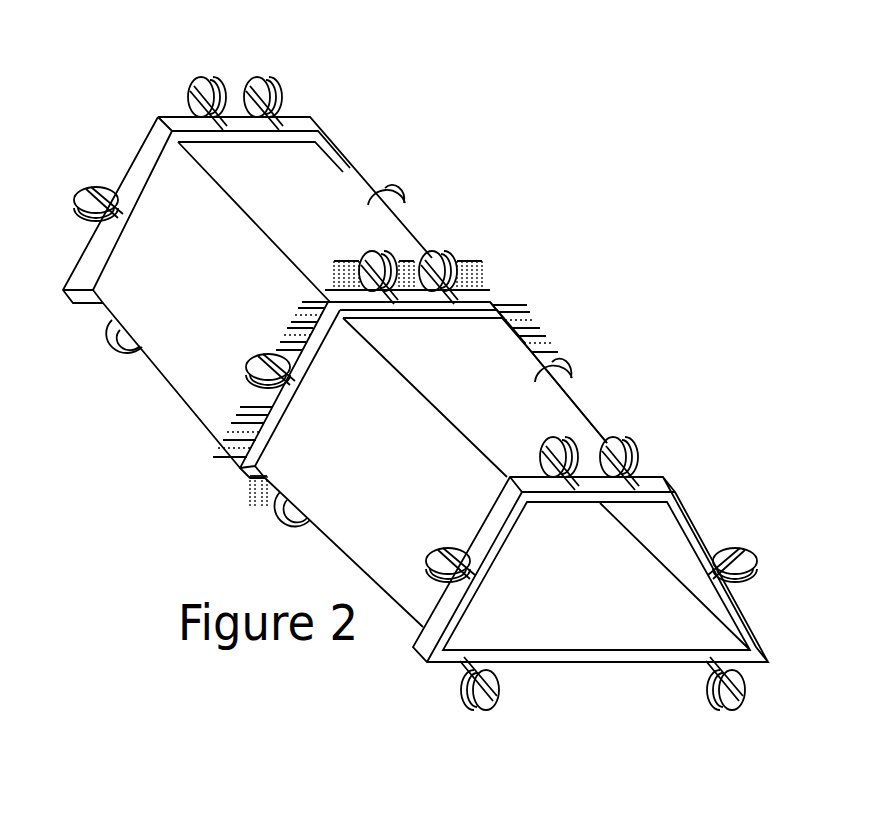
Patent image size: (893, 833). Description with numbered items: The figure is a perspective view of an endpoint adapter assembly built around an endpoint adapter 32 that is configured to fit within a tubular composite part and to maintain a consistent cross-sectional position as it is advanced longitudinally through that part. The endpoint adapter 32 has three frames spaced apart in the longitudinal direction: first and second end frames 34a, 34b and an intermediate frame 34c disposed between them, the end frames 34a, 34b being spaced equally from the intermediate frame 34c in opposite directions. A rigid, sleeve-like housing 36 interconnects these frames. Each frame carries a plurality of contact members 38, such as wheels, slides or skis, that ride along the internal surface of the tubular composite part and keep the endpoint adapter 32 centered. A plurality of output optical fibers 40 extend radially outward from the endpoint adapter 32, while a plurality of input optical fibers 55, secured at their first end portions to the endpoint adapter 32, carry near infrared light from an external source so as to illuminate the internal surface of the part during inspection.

The endpoint adapter 32 is at (586, 418).
The first end frame 34a is at (333, 150).
The second end frame 34b is at (682, 518).
The intermediate frame 34c is at (242, 476).
The housing 36 is at (342, 192).
The contact members 38 is at (254, 84).
The output optical fibers 40 is at (480, 275).
The input optical fibers 55 is at (543, 350).